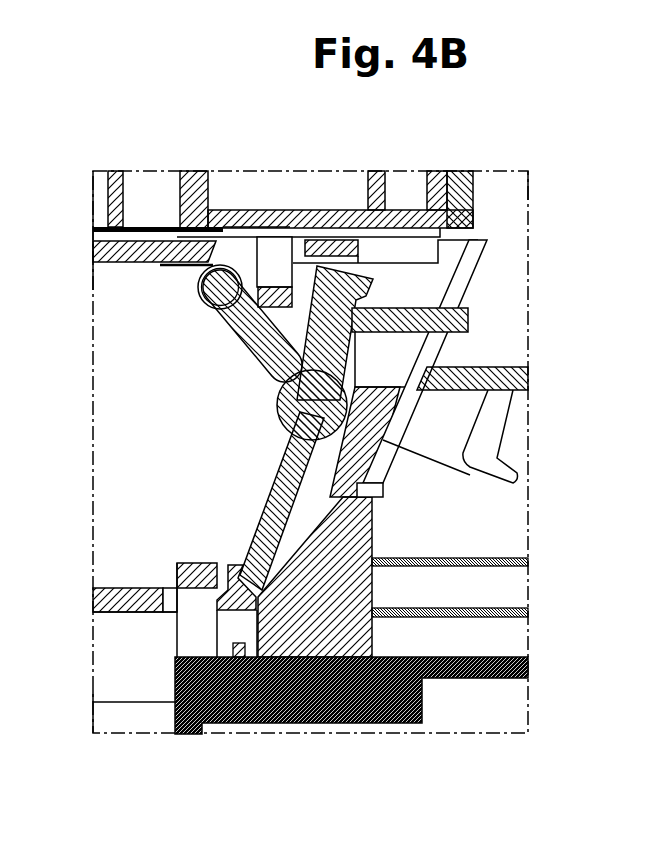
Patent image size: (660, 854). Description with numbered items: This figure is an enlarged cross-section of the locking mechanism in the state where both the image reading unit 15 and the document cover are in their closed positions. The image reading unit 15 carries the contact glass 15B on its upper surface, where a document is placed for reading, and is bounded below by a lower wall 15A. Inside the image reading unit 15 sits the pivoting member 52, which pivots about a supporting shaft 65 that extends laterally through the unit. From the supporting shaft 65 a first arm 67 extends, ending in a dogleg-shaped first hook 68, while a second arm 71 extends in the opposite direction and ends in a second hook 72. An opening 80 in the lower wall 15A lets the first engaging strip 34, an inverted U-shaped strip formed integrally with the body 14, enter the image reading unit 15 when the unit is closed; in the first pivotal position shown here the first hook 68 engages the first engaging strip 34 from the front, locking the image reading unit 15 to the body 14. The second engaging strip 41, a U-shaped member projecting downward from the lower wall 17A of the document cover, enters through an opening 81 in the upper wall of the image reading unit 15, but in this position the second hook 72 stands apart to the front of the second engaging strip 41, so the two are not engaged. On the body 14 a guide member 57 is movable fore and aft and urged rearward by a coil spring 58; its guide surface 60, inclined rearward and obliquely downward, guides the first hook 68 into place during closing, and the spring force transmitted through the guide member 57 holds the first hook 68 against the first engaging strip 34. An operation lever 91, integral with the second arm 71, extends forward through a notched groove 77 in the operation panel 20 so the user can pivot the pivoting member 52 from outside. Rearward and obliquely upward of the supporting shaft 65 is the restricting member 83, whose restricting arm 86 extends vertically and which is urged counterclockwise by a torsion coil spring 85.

The body 14 is at (467, 680).
The image reading unit 15 is at (447, 200).
The lower wall 15A is at (112, 612).
The contact glass 15B is at (127, 264).
The lower wall 17A is at (258, 238).
The operation panel 20 is at (510, 262).
The first engaging strip 34 is at (190, 562).
The second engaging strip 41 is at (273, 238).
The pivoting member 52 is at (228, 440).
The guide member 57 is at (418, 723).
The coil spring 58 is at (500, 618).
The guide surface 60 is at (310, 527).
The supporting shaft 65 is at (273, 403).
The first arm 67 is at (255, 512).
The first hook 68 is at (240, 608).
The second arm 71 is at (360, 300).
The second hook 72 is at (345, 238).
The notched groove 77 is at (432, 270).
The opening 80 is at (177, 610).
The opening 81 is at (215, 263).
The restricting member 83 is at (130, 317).
The torsion coil spring 85 is at (185, 262).
The restricting arm 86 is at (237, 345).
The operation lever 91 is at (480, 272).